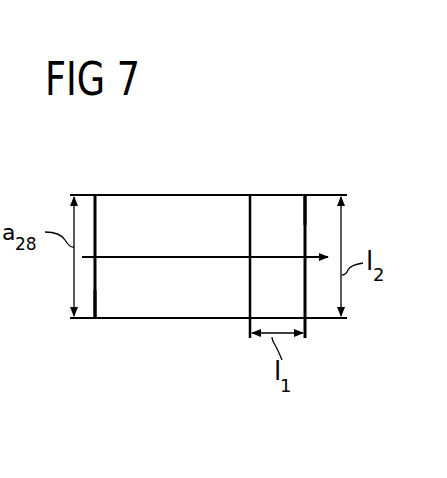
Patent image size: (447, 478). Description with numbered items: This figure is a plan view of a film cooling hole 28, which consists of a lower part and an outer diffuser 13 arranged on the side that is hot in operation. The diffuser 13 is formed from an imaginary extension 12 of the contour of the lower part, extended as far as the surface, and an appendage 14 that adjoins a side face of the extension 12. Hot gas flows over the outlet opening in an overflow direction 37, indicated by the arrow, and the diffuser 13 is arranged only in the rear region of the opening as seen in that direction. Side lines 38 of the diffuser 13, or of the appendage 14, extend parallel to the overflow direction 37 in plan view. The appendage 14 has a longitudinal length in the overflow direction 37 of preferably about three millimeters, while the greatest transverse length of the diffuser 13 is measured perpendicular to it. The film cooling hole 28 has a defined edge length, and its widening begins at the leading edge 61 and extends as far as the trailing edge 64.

The extension 12 is at (162, 305).
The diffuser 13 is at (230, 218).
The appendage 14 is at (288, 243).
The film cooling hole 28 is at (162, 208).
The overflow direction 37 is at (127, 257).
The side lines 38 is at (202, 320).
The leading edge 61 is at (95, 302).
The trailing edge 64 is at (307, 215).